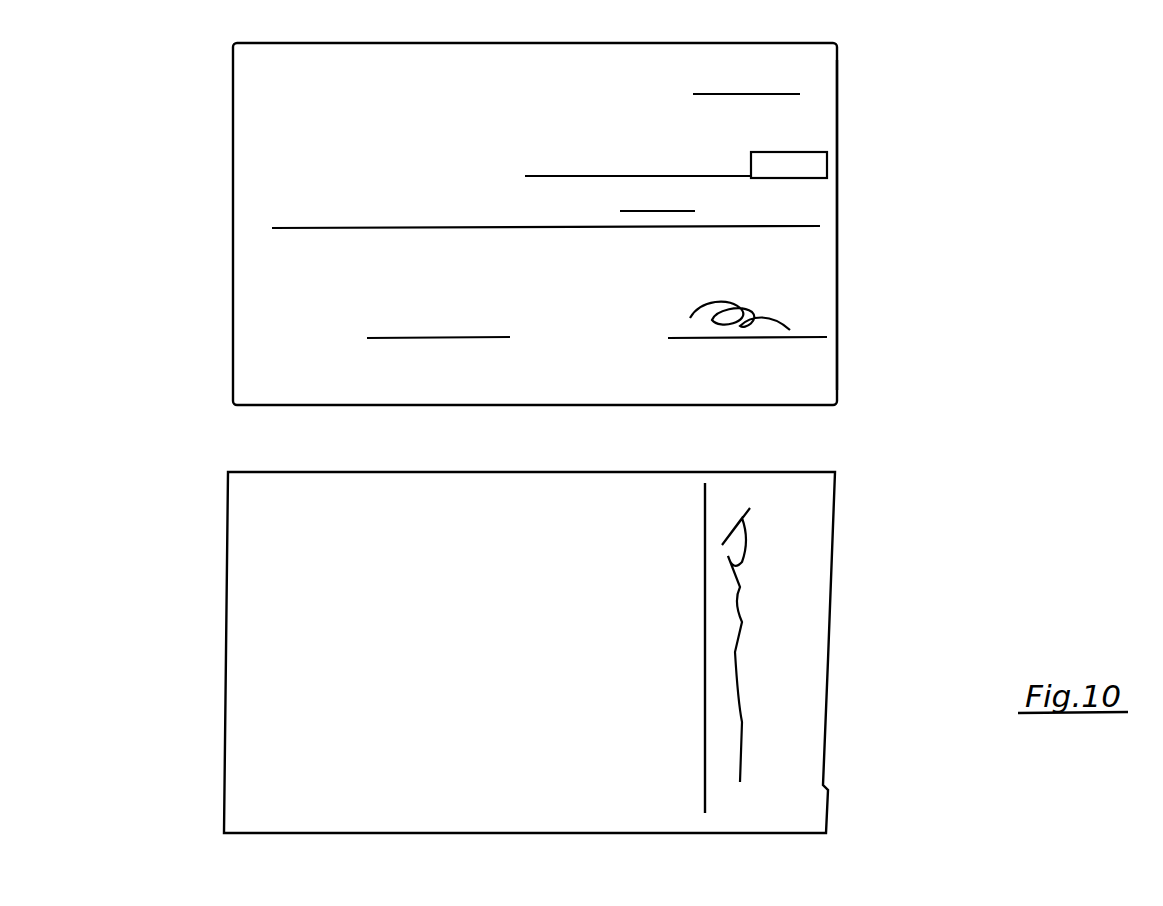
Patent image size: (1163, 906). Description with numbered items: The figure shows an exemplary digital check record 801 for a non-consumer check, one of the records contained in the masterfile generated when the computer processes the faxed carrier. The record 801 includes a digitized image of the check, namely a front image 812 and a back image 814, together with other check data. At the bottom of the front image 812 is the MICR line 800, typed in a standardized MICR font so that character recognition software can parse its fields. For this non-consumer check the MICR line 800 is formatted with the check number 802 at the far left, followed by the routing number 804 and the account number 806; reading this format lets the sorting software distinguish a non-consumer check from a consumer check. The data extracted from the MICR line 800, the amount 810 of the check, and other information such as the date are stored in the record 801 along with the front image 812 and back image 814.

The MICR line 800 is at (230, 397).
The record 801 is at (1058, 152).
The check number 802 is at (367, 395).
The routing number 804 is at (525, 395).
The account number 806 is at (693, 395).
The amount 810 is at (838, 166).
The front image 812 is at (842, 102).
The back image 814 is at (836, 613).